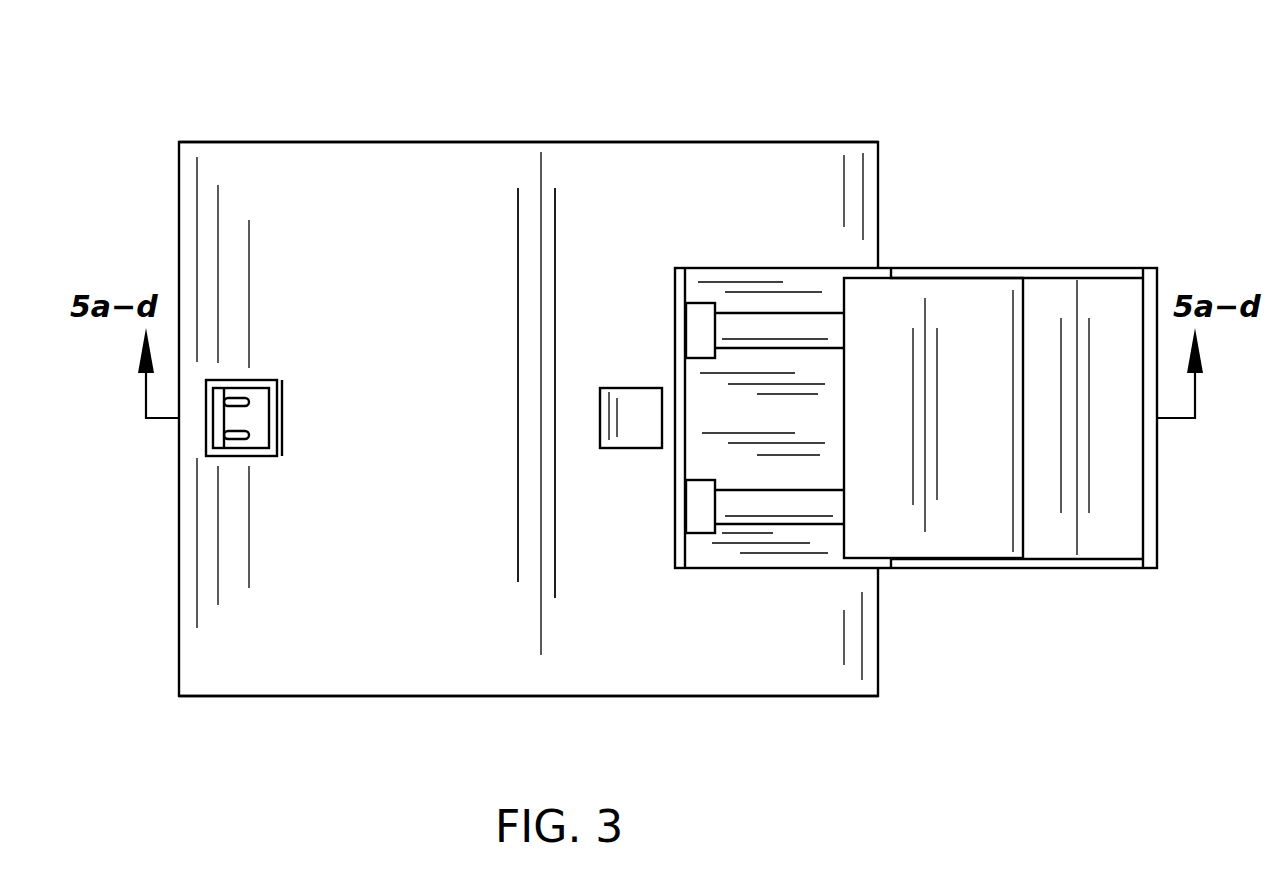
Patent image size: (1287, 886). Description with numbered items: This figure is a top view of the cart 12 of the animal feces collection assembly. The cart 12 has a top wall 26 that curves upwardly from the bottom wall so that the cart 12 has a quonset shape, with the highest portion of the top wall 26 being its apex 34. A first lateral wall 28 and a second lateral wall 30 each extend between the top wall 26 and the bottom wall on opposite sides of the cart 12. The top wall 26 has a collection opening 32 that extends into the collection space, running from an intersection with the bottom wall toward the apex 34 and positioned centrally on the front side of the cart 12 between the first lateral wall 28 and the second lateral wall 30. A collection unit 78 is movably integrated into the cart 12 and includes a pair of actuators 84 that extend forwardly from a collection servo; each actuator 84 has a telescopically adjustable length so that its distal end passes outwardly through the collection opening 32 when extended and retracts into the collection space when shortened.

The cart 12 is at (467, 128).
The top wall 26 is at (547, 193).
The first lateral wall 28 is at (720, 696).
The second lateral wall 30 is at (663, 142).
The collection opening 32 is at (752, 273).
The apex 34 is at (532, 413).
The collection unit 78 is at (933, 315).
The actuators 84 is at (805, 330).